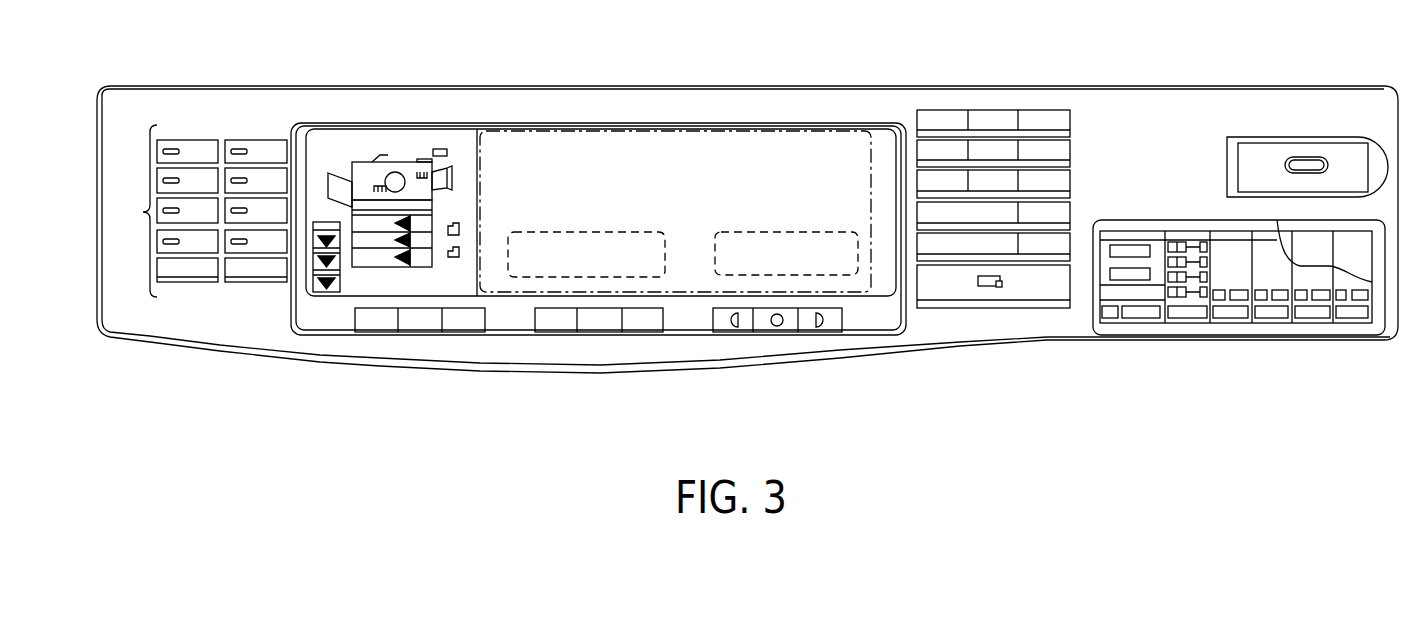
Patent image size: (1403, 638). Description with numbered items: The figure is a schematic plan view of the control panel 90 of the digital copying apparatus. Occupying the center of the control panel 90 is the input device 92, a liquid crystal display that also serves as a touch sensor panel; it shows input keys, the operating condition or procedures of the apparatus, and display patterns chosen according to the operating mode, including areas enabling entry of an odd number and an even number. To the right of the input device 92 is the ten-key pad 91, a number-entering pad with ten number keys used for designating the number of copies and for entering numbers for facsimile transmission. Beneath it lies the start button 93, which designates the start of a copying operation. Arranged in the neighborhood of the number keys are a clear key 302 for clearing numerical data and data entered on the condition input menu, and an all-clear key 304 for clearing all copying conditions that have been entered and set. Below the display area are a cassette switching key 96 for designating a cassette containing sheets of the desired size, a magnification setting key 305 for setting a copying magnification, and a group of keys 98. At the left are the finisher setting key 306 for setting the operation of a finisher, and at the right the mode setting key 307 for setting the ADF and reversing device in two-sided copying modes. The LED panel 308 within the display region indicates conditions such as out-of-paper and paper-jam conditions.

The control panel 90 is at (1163, 86).
The ten-key pad 91 is at (1082, 110).
The input device 92 is at (668, 125).
The start button 93 is at (1038, 292).
The cassette switching key 96 is at (421, 332).
The mode keys 98 is at (777, 332).
The clear key 302 is at (989, 221).
The all-clear key 304 is at (933, 247).
The magnification setting key 305 is at (594, 332).
The finisher setting key 306 is at (143, 212).
The mode setting key 307 is at (1372, 345).
The LED panel 308 is at (403, 137).